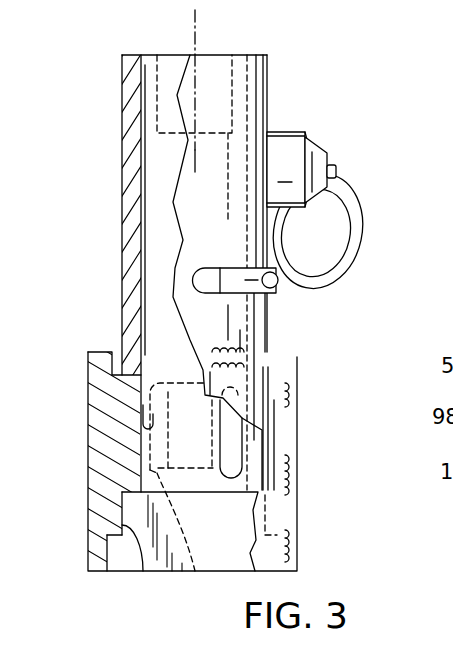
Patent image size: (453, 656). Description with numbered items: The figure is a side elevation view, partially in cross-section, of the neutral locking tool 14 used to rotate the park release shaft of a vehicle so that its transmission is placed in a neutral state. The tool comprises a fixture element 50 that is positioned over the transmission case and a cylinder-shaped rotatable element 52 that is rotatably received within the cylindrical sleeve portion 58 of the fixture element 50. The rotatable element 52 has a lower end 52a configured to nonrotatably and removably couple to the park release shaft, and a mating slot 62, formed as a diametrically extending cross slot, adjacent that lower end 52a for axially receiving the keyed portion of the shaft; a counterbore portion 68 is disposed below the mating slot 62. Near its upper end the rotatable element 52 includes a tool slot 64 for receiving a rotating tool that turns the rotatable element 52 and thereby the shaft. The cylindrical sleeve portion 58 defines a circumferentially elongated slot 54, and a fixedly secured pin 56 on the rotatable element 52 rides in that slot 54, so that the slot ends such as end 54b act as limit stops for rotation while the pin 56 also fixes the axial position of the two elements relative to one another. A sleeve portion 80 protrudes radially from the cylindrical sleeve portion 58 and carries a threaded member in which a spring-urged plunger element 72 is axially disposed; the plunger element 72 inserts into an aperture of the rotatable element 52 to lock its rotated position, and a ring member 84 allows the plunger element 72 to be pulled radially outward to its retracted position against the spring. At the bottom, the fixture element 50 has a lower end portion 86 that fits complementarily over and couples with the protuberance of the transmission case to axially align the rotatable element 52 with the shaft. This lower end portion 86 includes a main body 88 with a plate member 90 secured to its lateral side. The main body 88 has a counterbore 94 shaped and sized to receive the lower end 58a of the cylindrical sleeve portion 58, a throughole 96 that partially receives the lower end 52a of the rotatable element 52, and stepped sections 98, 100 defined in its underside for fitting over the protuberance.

The neutral locking tool 14 is at (90, 222).
The fixture element 50 is at (310, 376).
The rotatable element 52 is at (148, 157).
The lower end 52a is at (132, 498).
The circumferentially elongated slot 54 is at (212, 273).
The elongated end 54b is at (192, 290).
The fixedly secured pin 56 is at (270, 293).
The cylindrical sleeve portion 58 is at (262, 86).
The lower end 58a is at (88, 353).
The mating slot 62 is at (230, 433).
The tool slot 64 is at (172, 62).
The counterbore portion 68 is at (195, 562).
The plunger element 72 is at (338, 163).
The sleeve portion 80 is at (283, 147).
The ring member 84 is at (355, 226).
The lower end portion 86 is at (84, 426).
The main body 88 is at (100, 465).
The plate member 90 is at (273, 510).
The counterbore 94 is at (125, 356).
The throughole 96 is at (142, 405).
The stepped section 98 is at (105, 557).
The stepped section 100 is at (143, 562).